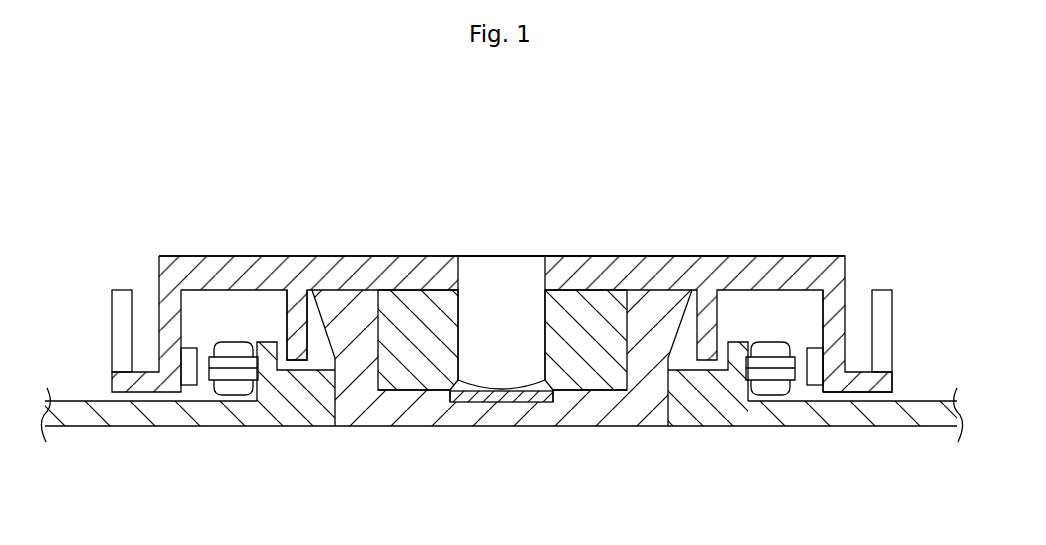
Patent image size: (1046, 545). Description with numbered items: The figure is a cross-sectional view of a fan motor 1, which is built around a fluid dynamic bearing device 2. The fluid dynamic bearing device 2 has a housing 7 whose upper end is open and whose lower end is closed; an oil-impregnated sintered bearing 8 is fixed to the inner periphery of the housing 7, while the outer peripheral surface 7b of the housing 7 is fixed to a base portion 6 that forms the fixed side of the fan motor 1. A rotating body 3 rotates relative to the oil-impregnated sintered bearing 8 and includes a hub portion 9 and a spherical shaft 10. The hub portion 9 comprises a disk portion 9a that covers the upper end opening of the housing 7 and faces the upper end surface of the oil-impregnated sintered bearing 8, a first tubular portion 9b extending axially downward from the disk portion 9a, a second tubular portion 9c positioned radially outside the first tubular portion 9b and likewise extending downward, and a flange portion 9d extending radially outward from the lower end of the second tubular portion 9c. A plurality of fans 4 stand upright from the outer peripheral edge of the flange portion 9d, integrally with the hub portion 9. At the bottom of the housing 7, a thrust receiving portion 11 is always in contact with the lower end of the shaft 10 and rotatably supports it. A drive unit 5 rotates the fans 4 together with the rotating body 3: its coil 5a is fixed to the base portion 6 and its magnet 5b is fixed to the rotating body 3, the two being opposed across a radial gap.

The fan motor 1 is at (413, 171).
The fluid dynamic bearing device 2 is at (565, 267).
The rotating body 3 is at (492, 247).
The fans 4 is at (122, 329).
The drive unit 5 is at (501, 431).
The coil 5a is at (236, 388).
The magnet 5b is at (190, 386).
The base portion 6 is at (691, 412).
The housing 7 is at (419, 418).
The outer peripheral surface 7b is at (333, 392).
The oil-impregnated sintered bearing 8 is at (590, 380).
The hub portion 9 is at (660, 260).
The disk portion 9a is at (408, 266).
The first tubular portion 9b is at (287, 318).
The second tubular portion 9c is at (826, 318).
The flange portion 9d is at (873, 393).
The shaft 10 is at (509, 285).
The thrust receiving portion 11 is at (507, 402).